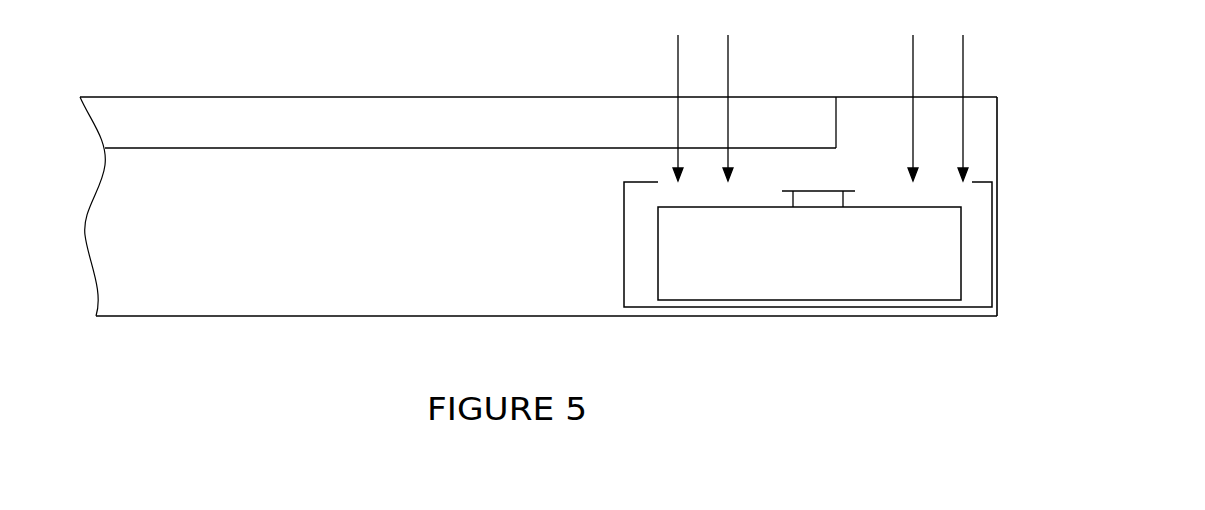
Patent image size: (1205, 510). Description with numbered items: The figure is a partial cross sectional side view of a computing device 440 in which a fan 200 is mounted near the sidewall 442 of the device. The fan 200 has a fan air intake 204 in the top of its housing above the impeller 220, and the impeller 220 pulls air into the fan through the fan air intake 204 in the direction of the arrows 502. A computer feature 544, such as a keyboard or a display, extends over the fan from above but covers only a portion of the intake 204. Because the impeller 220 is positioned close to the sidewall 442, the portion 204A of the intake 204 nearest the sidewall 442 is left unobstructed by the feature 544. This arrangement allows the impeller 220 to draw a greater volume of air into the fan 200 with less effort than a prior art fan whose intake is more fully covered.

The fan 200 is at (624, 243).
The fan air intake 204 is at (703, 185).
The portion of the intake 204A is at (935, 184).
The impeller 220 is at (962, 285).
The computing device 440 is at (206, 316).
The sidewall 442 is at (997, 240).
The arrows 502 is at (727, 108).
The computer feature 544 is at (421, 97).